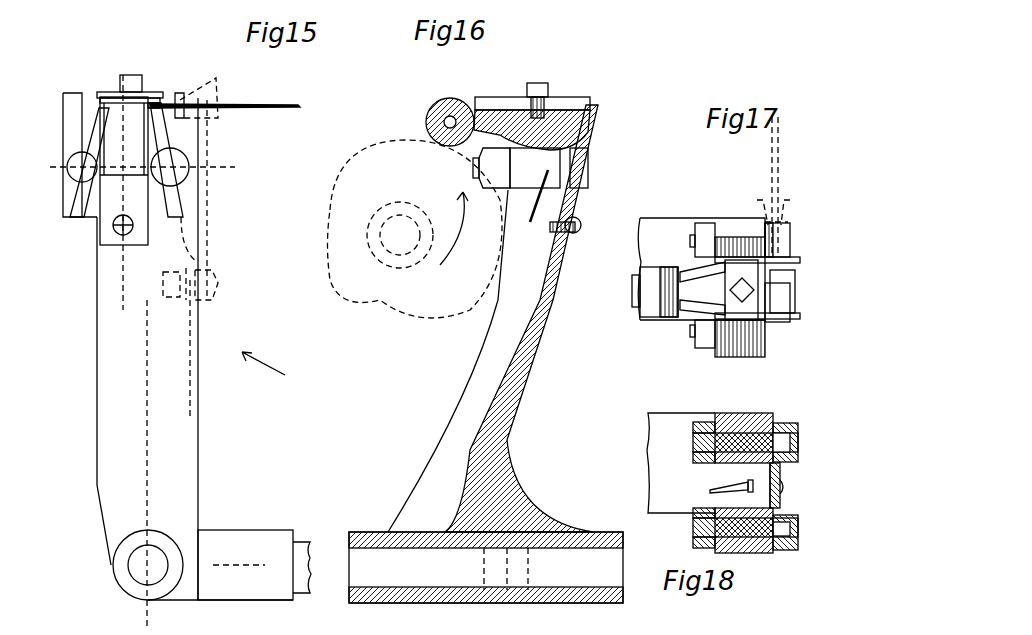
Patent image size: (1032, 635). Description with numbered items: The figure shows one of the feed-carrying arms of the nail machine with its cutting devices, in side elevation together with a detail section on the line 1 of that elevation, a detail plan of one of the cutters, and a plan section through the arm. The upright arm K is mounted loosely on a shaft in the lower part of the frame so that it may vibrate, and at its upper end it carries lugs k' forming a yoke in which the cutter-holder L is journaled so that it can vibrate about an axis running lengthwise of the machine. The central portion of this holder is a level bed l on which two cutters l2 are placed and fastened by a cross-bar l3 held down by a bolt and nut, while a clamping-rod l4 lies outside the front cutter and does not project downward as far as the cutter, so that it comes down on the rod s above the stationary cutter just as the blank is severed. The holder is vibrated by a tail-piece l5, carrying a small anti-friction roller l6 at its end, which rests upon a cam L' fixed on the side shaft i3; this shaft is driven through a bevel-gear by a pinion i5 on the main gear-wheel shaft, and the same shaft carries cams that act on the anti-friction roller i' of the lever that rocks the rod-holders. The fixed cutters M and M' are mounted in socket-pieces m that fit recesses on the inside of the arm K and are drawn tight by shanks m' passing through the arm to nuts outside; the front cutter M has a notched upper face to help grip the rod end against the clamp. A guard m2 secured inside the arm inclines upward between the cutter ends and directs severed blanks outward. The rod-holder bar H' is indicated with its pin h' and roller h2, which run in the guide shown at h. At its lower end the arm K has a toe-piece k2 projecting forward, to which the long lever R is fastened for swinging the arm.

In FIG. 15, the upright arm K is at (171, 352).
In FIG. 16, the upright arm K is at (486, 386).
In FIG. 18, the upright arm K is at (655, 483).
In FIG. 15, the lug k' is at (128, 139).
In FIG. 15, the toe-piece k2 is at (245, 565).
In FIG. 15, the long lever R is at (308, 555).
In FIG. 15, the section line 1 is at (126, 75).
In FIG. 15, the cutter l2 is at (104, 96).
In FIG. 16, the cutter l2 is at (582, 100).
In FIG. 17, the cutter l2 is at (687, 277).
In FIG. 15, the clamping-rod l4 is at (160, 104).
In FIG. 17, the clamping-rod l4 is at (716, 258).
In FIG. 16, the bed l is at (497, 118).
In FIG. 16, the cross-bar l3 is at (549, 97).
In FIG. 17, the tail-piece l5 is at (660, 288).
In FIG. 16, the roller l6 is at (428, 118).
In FIG. 17, the roller l6 is at (636, 292).
In FIG. 16, the cutter-holder L is at (532, 86).
In FIG. 17, the cutter-holder L is at (701, 269).
In FIG. 16, the cam L' is at (415, 229).
In FIG. 16, the side shaft i3 is at (400, 235).
In FIG. 17, the side shaft i3 is at (742, 281).
In FIG. 16, the pinion i5 is at (466, 104).
In FIG. 17, the anti-friction roller i' is at (714, 278).
In FIG. 15, the pulley / guide h is at (144, 132).
In FIG. 17, the pulley / guide h is at (777, 203).
In FIG. 15, the pin h' is at (216, 285).
In FIG. 15, the anti-friction roller h2 is at (166, 284).
In FIG. 15, the holder-bar H' is at (203, 239).
In FIG. 15, the rod s is at (225, 95).
In FIG. 17, the rod s is at (782, 187).
In FIG. 15, the front stationary cutter M is at (205, 142).
In FIG. 16, the front stationary cutter M is at (537, 315).
In FIG. 17, the front stationary cutter M is at (770, 268).
In FIG. 18, the front stationary cutter M is at (759, 426).
In FIG. 15, the fixed cutter M' is at (64, 126).
In FIG. 17, the fixed cutter M' is at (773, 316).
In FIG. 18, the fixed cutter M' is at (762, 543).
In FIG. 15, the socket-piece m is at (144, 189).
In FIG. 16, the socket-piece m is at (592, 168).
In FIG. 18, the socket-piece m is at (758, 486).
In FIG. 16, the shank m' is at (486, 168).
In FIG. 18, the shank m' is at (663, 489).
In FIG. 15, the guard m2 is at (130, 168).
In FIG. 16, the guard m2 is at (578, 145).
In FIG. 18, the guard m2 is at (782, 486).